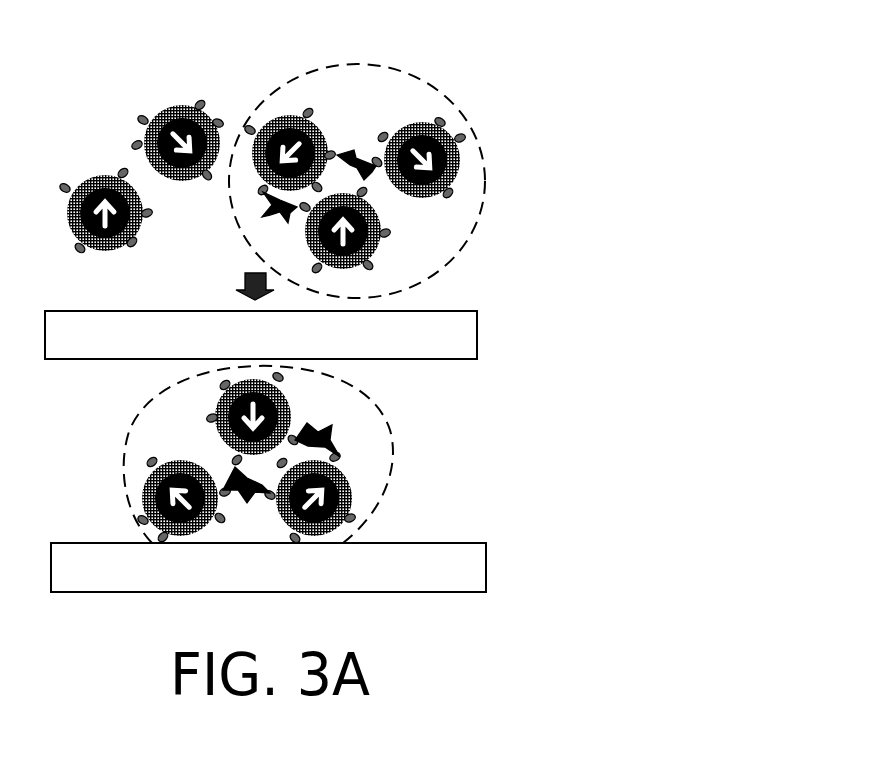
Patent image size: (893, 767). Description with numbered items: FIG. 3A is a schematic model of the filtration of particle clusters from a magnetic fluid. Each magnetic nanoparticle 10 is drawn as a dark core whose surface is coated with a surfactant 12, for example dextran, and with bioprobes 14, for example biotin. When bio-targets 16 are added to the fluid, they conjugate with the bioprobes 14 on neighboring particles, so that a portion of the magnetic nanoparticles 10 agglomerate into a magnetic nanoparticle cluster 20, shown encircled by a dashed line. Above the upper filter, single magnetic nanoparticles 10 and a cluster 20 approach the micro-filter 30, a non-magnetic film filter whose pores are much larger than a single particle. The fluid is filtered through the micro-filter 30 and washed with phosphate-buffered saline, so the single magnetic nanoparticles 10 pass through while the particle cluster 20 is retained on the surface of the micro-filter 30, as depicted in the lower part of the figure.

The magnetic nanoparticle 10 is at (450, 168).
The surfactant 12 is at (413, 149).
The bioprobe 14 is at (470, 155).
The bio-target 16 is at (353, 156).
The magnetic nanoparticle cluster 20 is at (388, 472).
The micro-filter 30 is at (477, 323).